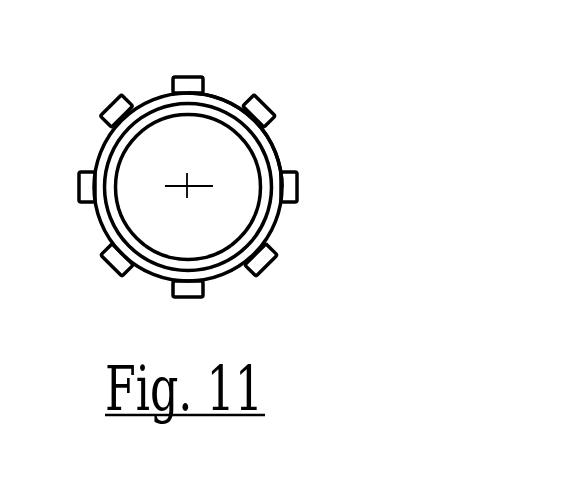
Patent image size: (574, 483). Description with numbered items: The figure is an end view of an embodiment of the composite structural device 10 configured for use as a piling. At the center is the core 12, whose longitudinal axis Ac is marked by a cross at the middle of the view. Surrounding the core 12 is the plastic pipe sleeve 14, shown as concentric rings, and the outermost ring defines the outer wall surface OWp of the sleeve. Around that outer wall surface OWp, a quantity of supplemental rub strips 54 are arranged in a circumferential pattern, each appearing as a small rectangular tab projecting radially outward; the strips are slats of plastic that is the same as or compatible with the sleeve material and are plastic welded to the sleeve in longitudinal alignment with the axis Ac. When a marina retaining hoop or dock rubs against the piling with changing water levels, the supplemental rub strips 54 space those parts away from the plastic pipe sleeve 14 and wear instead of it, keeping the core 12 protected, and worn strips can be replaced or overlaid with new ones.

The composite structural device 10 is at (363, 60).
The core 12 is at (233, 93).
The plastic pipe sleeve 14 is at (158, 93).
The longitudinal axis Ac is at (183, 184).
The outer wall surface OWp is at (283, 144).
The supplemental rub strips 54 is at (297, 197).